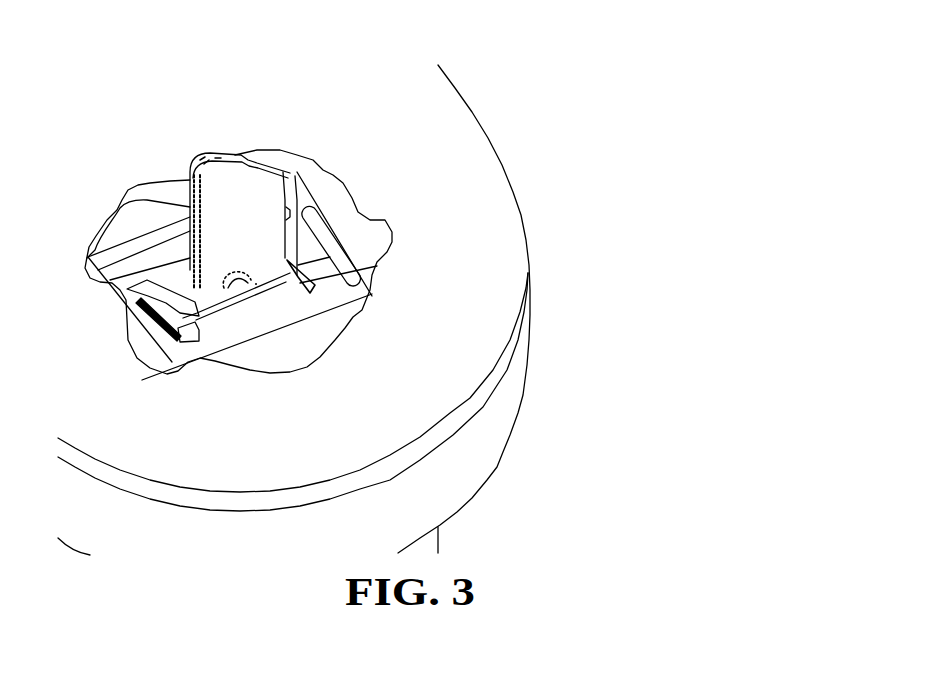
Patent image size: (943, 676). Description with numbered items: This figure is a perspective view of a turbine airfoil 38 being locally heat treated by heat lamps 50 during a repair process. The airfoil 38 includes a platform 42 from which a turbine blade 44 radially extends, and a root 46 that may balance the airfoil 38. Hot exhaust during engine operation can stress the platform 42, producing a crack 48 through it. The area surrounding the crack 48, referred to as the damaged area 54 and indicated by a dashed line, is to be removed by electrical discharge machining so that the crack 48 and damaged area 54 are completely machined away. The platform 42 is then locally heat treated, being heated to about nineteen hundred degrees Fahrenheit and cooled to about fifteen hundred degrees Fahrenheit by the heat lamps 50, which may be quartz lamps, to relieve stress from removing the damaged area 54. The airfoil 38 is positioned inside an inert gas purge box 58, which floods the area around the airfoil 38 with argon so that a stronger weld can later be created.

The turbine airfoil 38 is at (256, 120).
The platform 42 is at (160, 323).
The turbine blade 44 is at (270, 197).
The root 46 is at (203, 335).
The crack 48 is at (232, 284).
The heat lamp 50 is at (138, 213).
The damaged area 54 is at (237, 288).
The inert gas purge box 58 is at (480, 193).